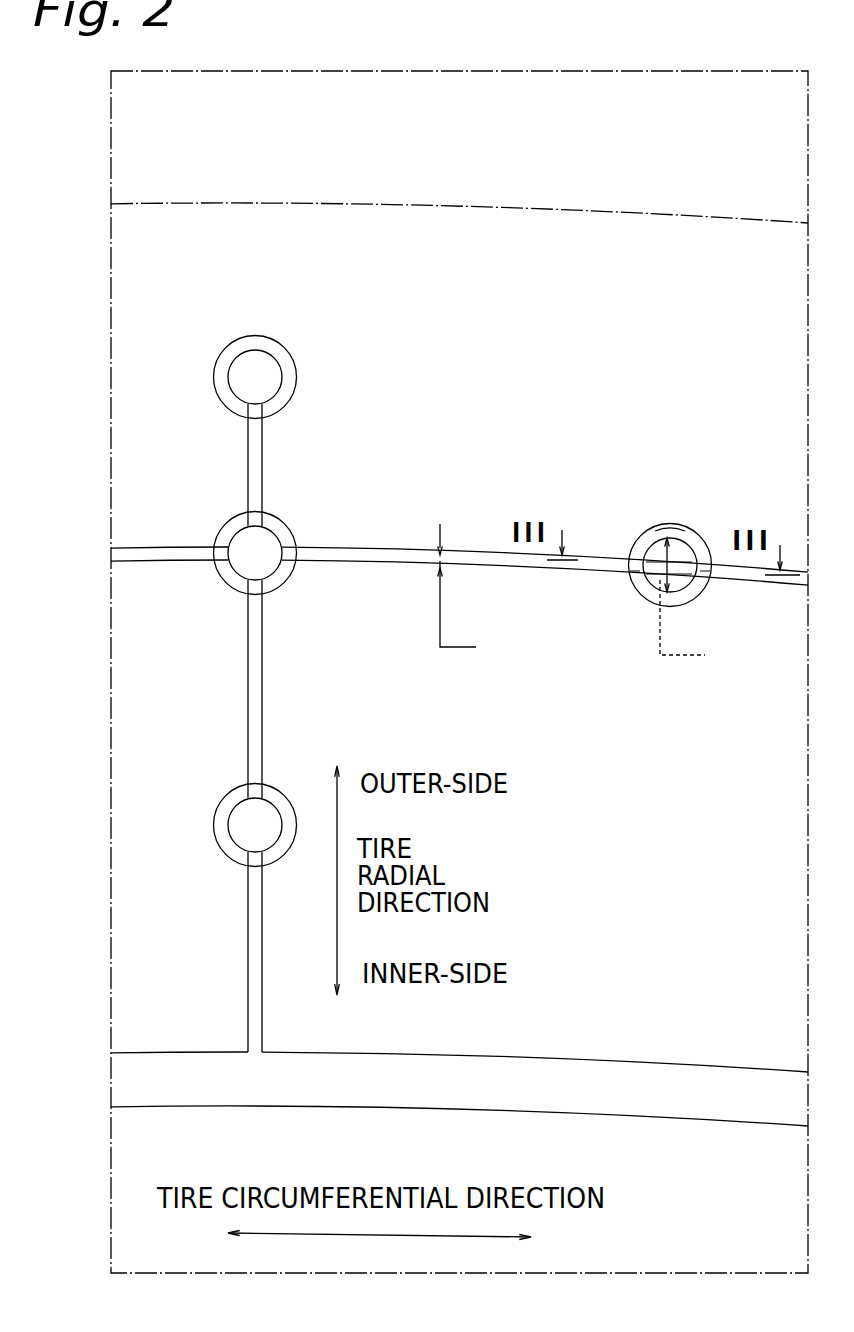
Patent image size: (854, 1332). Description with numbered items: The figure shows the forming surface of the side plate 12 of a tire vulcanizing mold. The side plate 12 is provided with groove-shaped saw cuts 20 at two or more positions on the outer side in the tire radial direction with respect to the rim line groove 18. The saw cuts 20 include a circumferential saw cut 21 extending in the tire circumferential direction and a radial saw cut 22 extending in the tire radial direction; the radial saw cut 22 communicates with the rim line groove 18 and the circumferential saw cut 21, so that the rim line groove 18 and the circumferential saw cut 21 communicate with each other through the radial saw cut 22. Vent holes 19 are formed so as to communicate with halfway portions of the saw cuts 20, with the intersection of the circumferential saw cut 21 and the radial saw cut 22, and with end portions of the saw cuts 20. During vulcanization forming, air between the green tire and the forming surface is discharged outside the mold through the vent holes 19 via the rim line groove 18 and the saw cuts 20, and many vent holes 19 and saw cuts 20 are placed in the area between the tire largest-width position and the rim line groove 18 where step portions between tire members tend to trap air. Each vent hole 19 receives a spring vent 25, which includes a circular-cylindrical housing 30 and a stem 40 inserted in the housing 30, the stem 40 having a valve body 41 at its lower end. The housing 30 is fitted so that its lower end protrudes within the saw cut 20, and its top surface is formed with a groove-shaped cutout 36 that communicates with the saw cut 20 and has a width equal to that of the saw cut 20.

The side plate 12 is at (664, 853).
The rim line groove 18 is at (616, 1083).
The vent hole 19 is at (222, 353).
The saw cut 20 is at (459, 728).
The circumferential saw cut 21 is at (384, 547).
The radial saw cut 22 is at (263, 738).
The spring vent 25 is at (269, 392).
The housing 30 is at (684, 537).
The cutout 36 is at (632, 571).
The stem 40 is at (723, 511).
The valve body 41 is at (686, 563).